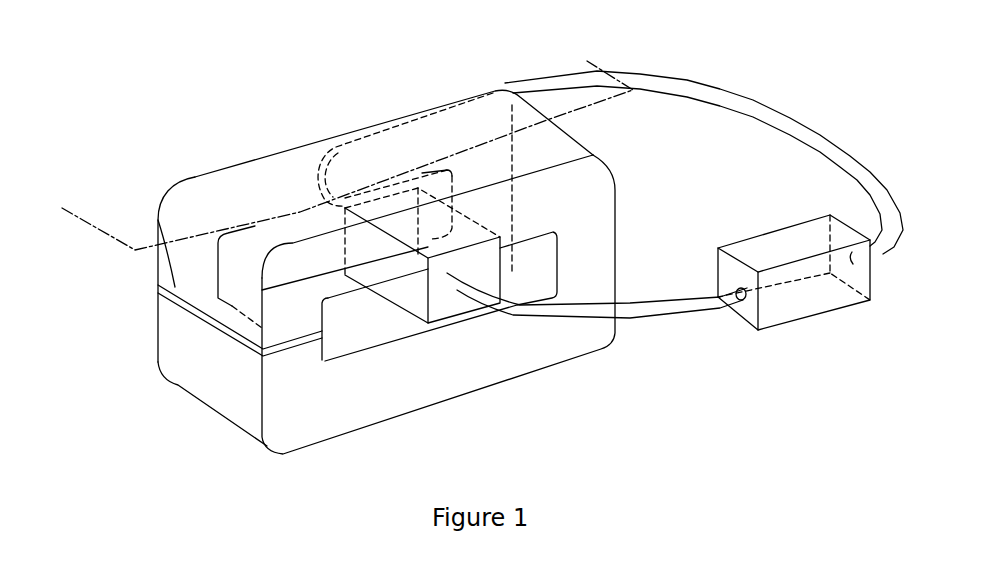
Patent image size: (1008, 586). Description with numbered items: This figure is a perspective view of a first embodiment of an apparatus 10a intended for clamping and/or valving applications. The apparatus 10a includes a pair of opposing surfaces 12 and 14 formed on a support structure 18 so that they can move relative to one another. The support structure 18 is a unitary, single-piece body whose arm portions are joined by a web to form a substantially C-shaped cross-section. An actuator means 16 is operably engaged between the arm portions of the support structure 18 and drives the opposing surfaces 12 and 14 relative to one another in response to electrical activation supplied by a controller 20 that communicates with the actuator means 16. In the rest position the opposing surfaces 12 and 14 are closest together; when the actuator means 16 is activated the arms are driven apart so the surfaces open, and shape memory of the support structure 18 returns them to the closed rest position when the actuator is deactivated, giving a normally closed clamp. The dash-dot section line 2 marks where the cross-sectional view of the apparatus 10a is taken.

The apparatus 10a is at (355, 84).
The opposing surface 12 is at (158, 220).
The opposing surface 14 is at (175, 297).
The actuator means 16 is at (450, 307).
The support structure 18 is at (287, 152).
The controller 20 is at (873, 278).
The section line 2- 2 is at (55, 201).